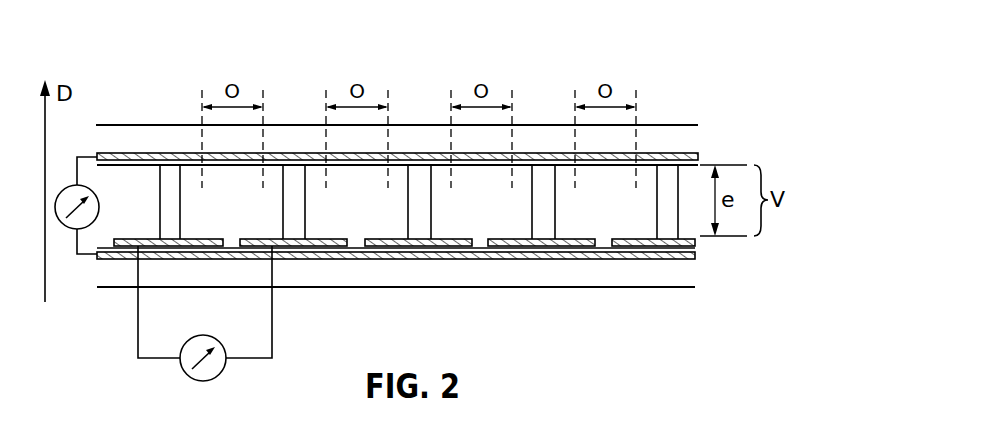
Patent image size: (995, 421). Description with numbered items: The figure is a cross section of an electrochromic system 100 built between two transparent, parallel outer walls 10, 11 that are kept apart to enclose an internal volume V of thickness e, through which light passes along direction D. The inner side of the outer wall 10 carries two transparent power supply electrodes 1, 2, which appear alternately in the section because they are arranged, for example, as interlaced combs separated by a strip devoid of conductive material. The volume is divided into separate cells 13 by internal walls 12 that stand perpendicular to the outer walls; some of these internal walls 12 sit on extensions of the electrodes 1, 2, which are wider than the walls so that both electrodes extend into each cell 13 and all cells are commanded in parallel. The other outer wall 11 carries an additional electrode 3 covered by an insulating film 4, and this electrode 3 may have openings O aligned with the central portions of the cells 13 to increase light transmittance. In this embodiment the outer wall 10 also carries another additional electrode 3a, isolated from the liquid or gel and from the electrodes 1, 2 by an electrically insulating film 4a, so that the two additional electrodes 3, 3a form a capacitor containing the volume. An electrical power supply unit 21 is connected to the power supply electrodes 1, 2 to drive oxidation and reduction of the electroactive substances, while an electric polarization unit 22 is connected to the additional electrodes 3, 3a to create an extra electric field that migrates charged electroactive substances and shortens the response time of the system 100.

The electrochromic system 100 is at (697, 87).
The outer wall 10 is at (686, 268).
The outer wall 11 is at (690, 140).
The internal wall 12 is at (417, 185).
The cell 13 is at (220, 213).
The transparent electrode 1 is at (158, 248).
The transparent electrode 2 is at (290, 248).
The additional electrode 3 is at (143, 160).
The insulating film 4 is at (103, 162).
The additional electrode 3a is at (353, 260).
The electrically insulating film 4a is at (462, 249).
The electrical power supply unit 21 is at (220, 373).
The electric polarization unit 22 is at (99, 201).